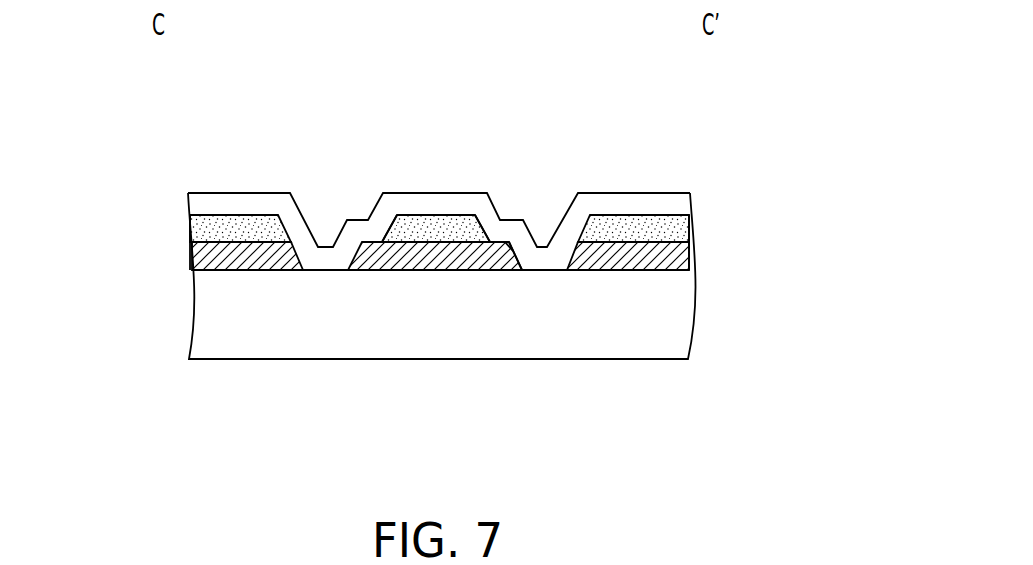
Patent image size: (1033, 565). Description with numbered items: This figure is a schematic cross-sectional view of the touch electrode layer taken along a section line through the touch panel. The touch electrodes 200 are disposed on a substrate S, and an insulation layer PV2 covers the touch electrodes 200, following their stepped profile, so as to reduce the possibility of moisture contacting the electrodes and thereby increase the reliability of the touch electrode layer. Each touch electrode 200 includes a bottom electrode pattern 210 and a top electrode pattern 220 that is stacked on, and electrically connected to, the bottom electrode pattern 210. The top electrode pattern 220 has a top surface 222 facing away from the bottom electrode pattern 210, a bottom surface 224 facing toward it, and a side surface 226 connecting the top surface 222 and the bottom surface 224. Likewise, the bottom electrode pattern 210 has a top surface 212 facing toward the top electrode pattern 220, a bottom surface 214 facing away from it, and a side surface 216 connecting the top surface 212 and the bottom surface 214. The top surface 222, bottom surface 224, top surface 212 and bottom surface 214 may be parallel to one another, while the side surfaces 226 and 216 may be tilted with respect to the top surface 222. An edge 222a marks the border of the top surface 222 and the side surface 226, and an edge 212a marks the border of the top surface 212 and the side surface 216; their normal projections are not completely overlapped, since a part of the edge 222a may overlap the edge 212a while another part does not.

The substrate S is at (682, 305).
The touch electrode 200 is at (98, 202).
The bottom electrode pattern 210 is at (190, 258).
The top surface of bottom electrode pattern 212 is at (505, 239).
The edge of top surface of bottom electrode pattern 212a is at (518, 245).
The bottom surface of bottom electrode pattern 214 is at (390, 273).
The side surface of bottom electrode pattern 216 is at (520, 261).
The top electrode pattern 220 is at (190, 225).
The top surface of top electrode pattern 222 is at (415, 212).
The edge of top surface of top electrode pattern 222a is at (473, 212).
The bottom surface of top electrode pattern 224 is at (437, 247).
The side surface of top electrode pattern 226 is at (383, 233).
The insulation layer PV2 is at (679, 200).